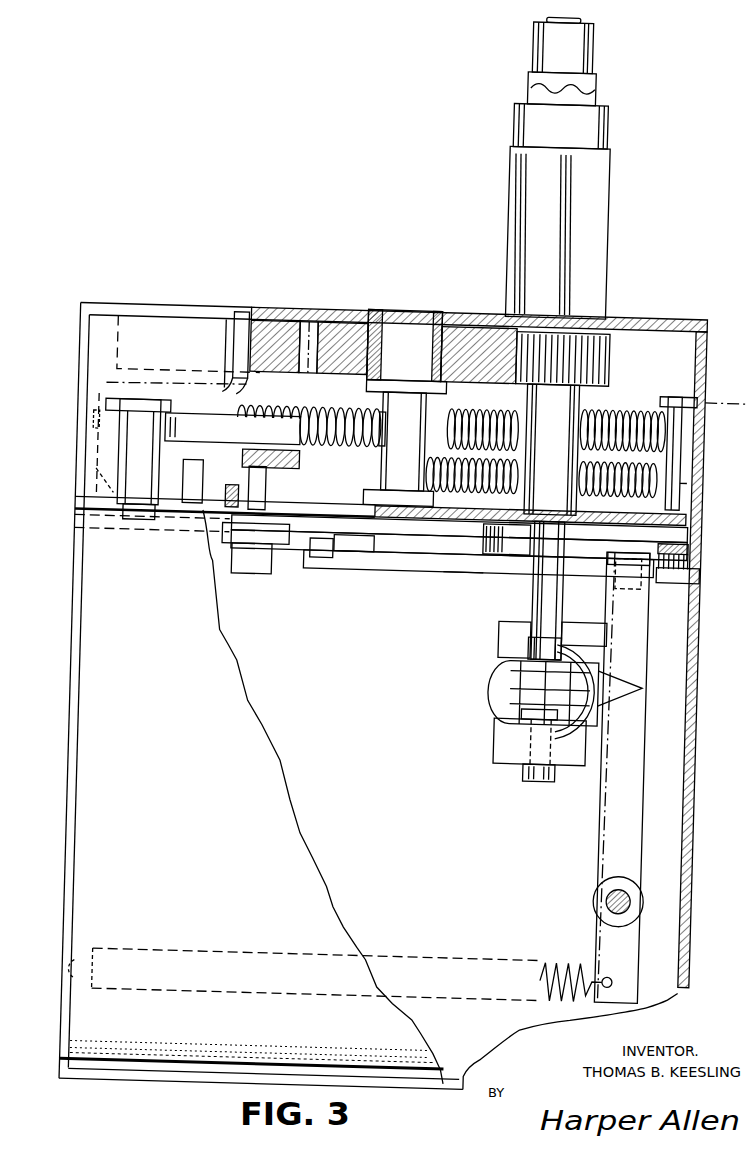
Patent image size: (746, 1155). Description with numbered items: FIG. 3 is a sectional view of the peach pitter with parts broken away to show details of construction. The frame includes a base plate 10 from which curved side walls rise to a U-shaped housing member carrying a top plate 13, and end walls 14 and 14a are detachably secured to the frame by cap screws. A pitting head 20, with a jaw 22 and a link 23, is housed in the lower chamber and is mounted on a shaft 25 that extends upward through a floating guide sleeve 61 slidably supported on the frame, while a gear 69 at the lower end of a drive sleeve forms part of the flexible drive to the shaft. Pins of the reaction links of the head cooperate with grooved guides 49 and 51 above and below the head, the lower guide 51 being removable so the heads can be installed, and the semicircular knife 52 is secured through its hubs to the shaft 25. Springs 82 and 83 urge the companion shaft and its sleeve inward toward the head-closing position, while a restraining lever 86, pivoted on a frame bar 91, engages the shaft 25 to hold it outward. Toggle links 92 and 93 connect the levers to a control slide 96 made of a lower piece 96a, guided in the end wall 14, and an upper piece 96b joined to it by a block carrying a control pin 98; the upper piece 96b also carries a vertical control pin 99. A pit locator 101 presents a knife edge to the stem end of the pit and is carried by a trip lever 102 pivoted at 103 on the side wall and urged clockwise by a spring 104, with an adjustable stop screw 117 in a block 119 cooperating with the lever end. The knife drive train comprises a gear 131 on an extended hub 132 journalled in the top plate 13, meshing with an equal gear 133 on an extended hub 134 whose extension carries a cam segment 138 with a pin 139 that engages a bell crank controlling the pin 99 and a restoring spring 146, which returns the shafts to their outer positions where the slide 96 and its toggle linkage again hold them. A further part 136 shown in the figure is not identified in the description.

The base plate 10 is at (161, 1088).
The top plate 13 is at (691, 316).
The end wall 14 is at (697, 791).
The end wall 14a is at (70, 759).
The pitting head 20 is at (486, 688).
The jaw 22 is at (98, 390).
The link 23 is at (98, 525).
The drive shaft 25 is at (530, 603).
The grooved guide 49 is at (497, 639).
The lower guide 51 is at (495, 749).
The knife 52 is at (590, 652).
The floating guide sleeve 61 is at (552, 449).
The gear 69 is at (600, 352).
The spring 82 is at (504, 408).
The spring 83 is at (612, 518).
The restraining lever 86 is at (476, 546).
The frame bar 91 is at (238, 560).
The link 92 is at (324, 559).
The link 93 is at (334, 548).
The control slide 96 is at (424, 575).
The lower piece of control slide 96a is at (464, 571).
The upper piece of control slide 96b is at (153, 520).
The control pin 98 is at (254, 577).
The control pin 99 is at (118, 522).
The pit locator 101 is at (637, 695).
The trip lever 102 is at (645, 786).
The pivot 103 is at (612, 900).
The spring 104 is at (582, 956).
The adjustable stop screw 117 is at (670, 540).
The block 119 is at (698, 548).
The gear 131 is at (476, 324).
The extended hub 132 is at (404, 356).
The gear 133 is at (270, 325).
The extended hub 134 is at (246, 300).
The latch block 136 is at (190, 508).
The cam segment 138 is at (292, 463).
The pin 139 is at (300, 396).
The restoring spring 146 is at (360, 412).